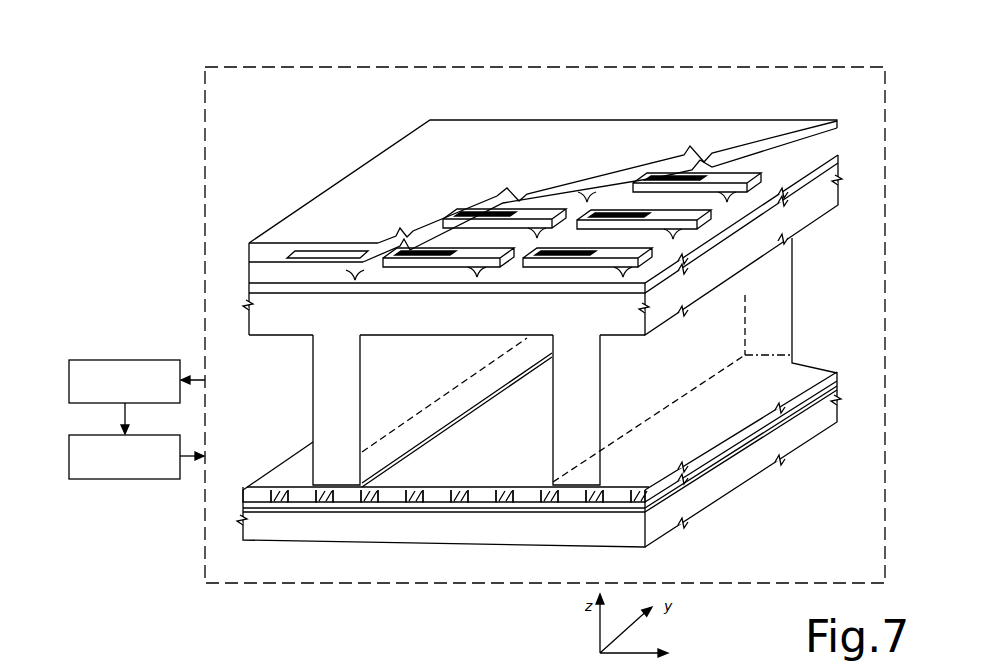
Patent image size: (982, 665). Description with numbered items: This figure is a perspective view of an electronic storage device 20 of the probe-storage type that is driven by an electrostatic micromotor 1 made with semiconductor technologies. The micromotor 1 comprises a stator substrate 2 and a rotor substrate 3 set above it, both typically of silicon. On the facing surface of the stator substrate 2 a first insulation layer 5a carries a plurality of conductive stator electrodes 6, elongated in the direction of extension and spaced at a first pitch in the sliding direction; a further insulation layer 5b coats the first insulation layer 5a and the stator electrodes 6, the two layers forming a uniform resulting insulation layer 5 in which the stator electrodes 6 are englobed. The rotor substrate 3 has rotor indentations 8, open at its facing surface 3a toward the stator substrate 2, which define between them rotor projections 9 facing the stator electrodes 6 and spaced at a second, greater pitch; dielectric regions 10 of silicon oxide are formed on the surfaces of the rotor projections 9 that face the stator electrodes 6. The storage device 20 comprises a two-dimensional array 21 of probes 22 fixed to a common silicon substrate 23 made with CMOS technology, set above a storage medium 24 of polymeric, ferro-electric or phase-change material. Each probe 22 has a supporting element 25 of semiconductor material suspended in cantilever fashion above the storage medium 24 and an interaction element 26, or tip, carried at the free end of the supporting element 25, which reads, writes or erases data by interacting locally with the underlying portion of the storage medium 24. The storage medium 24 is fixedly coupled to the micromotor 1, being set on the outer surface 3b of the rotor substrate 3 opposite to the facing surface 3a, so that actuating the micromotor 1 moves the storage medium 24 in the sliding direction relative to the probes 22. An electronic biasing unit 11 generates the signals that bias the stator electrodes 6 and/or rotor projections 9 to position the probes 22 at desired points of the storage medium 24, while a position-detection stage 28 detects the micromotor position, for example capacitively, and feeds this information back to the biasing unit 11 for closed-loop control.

The electrostatic micromotor 1 is at (783, 493).
The stator substrate 2 is at (243, 536).
The rotor substrate 3 is at (840, 176).
The facing surface 3a is at (262, 337).
The outer surface 3b is at (253, 283).
The resulting insulation layer 5 is at (830, 368).
The first insulation layer 5a is at (840, 392).
The further insulation layer 5b is at (838, 373).
The stator electrodes 6 is at (497, 497).
The rotor indentations 8 is at (548, 393).
The rotor projections 9 is at (325, 378).
The dielectric regions 10 is at (375, 486).
The electronic biasing unit 11 is at (130, 480).
The electronic storage device 20 is at (203, 130).
The two-dimensional array 21 is at (770, 178).
The probes 22 is at (723, 168).
The common substrate 23 is at (753, 130).
The storage medium 24 is at (840, 154).
The supporting element 25 is at (737, 182).
The interaction element 26 is at (712, 192).
The position-detection stage 28 is at (98, 358).